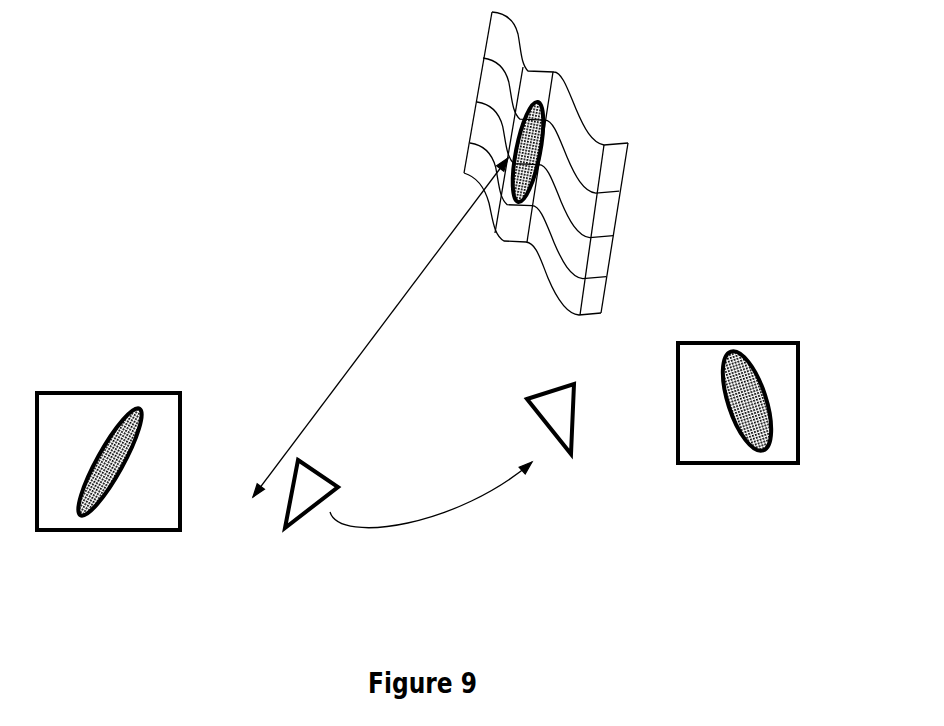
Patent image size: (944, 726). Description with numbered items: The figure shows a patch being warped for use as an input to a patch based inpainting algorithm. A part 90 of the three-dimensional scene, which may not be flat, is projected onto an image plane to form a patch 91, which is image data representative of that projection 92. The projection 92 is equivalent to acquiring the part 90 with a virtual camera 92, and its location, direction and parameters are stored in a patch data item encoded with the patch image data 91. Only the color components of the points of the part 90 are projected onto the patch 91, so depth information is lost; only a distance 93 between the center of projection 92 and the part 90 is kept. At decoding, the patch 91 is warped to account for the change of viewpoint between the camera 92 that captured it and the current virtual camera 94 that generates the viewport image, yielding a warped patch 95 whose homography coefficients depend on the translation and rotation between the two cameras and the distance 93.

The part of the 3D scene 90 is at (462, 143).
The patch 91 is at (108, 535).
The projection / virtual camera 92 is at (306, 523).
The distance 93 is at (382, 318).
The current virtual camera 94 is at (578, 432).
The second image of target region 95 is at (742, 463).